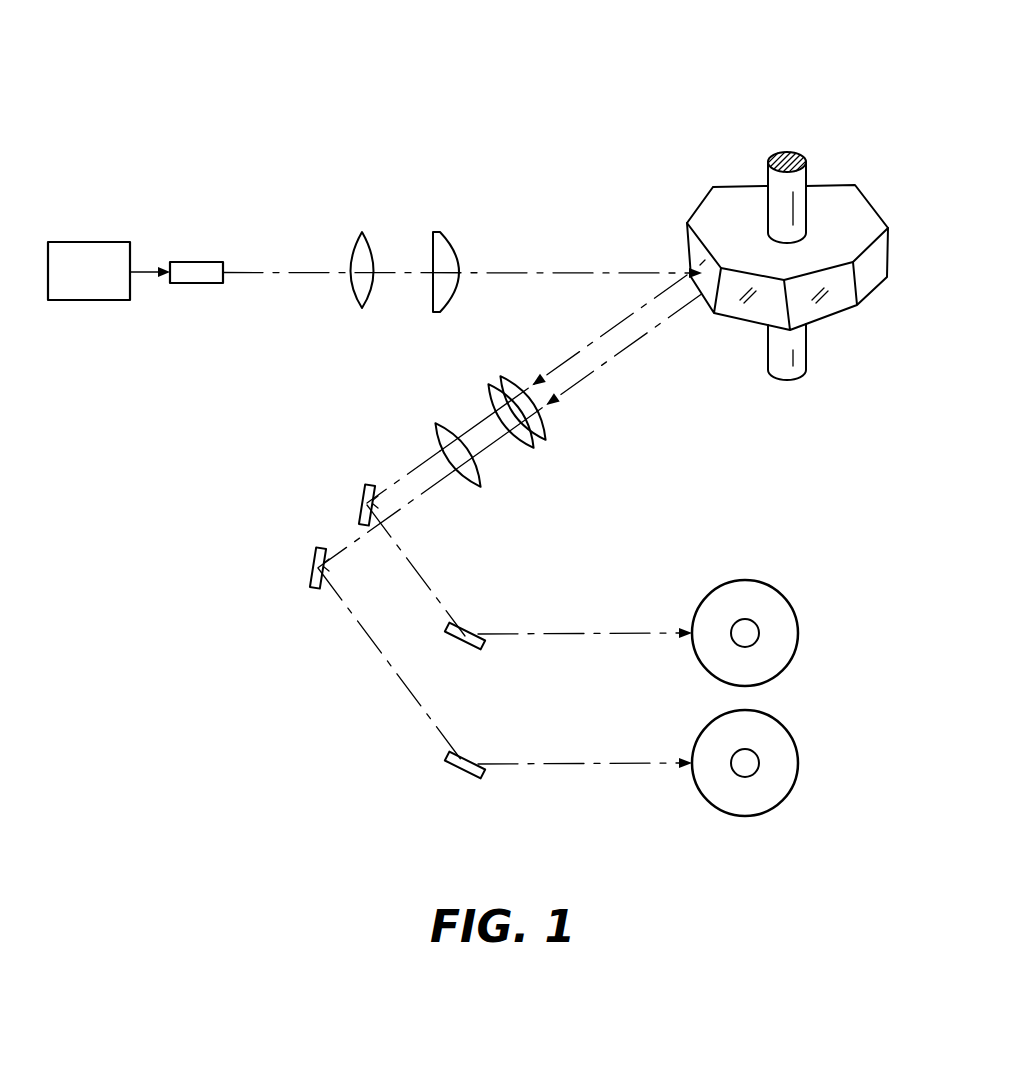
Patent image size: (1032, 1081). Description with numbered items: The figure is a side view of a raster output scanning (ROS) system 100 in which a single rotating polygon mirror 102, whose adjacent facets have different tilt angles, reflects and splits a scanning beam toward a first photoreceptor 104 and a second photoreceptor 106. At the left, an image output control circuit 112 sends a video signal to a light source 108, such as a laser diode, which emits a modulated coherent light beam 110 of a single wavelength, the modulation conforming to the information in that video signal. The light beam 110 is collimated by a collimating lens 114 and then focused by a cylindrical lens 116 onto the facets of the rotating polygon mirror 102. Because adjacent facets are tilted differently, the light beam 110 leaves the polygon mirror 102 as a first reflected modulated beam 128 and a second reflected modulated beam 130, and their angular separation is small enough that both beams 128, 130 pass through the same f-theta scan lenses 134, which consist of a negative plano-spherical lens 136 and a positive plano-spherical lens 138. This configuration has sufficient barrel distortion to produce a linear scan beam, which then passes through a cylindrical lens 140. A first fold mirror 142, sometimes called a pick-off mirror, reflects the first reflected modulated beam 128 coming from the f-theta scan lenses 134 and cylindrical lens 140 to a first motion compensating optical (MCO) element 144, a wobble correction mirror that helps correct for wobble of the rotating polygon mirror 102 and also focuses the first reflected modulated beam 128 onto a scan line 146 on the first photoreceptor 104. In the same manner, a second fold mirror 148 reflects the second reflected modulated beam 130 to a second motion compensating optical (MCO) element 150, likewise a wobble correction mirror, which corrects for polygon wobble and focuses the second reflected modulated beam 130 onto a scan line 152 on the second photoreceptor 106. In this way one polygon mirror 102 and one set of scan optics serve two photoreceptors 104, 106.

The raster output scanning (ROS) system 100 is at (313, 58).
The rotating polygon mirror 102 is at (840, 155).
The first photoreceptor 104 is at (751, 633).
The second photoreceptor 106 is at (751, 763).
The light source 108 is at (197, 262).
The light beam 110 is at (337, 272).
The image output control circuit 112 is at (68, 284).
The collimating lens 114 is at (367, 248).
The cylindrical lens 116 is at (440, 308).
The first reflected modulated beam 128 is at (613, 328).
The second reflected modulated beam 130 is at (623, 348).
The f-theta scan lenses 134 is at (492, 412).
The negative plano-spherical lens 136 is at (516, 380).
The positive plano-spherical lens 138 is at (522, 440).
The cylindrical lens 140 is at (435, 447).
The first fold mirror 142 is at (360, 492).
The first motion compensating optical (MCO) element 144 is at (458, 645).
The scan line 146 is at (690, 637).
The second fold mirror 148 is at (313, 555).
The second motion compensating optical (MCO) element 150 is at (458, 775).
The scan line 152 is at (690, 767).